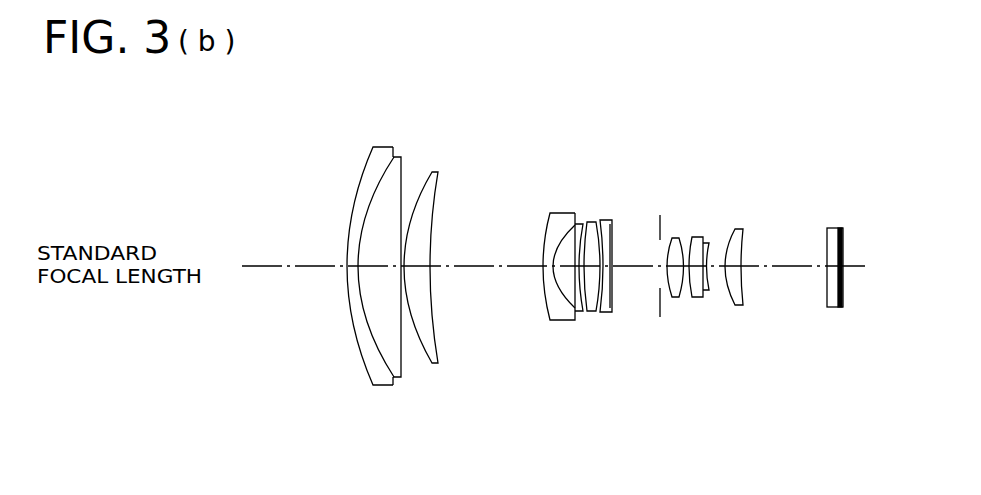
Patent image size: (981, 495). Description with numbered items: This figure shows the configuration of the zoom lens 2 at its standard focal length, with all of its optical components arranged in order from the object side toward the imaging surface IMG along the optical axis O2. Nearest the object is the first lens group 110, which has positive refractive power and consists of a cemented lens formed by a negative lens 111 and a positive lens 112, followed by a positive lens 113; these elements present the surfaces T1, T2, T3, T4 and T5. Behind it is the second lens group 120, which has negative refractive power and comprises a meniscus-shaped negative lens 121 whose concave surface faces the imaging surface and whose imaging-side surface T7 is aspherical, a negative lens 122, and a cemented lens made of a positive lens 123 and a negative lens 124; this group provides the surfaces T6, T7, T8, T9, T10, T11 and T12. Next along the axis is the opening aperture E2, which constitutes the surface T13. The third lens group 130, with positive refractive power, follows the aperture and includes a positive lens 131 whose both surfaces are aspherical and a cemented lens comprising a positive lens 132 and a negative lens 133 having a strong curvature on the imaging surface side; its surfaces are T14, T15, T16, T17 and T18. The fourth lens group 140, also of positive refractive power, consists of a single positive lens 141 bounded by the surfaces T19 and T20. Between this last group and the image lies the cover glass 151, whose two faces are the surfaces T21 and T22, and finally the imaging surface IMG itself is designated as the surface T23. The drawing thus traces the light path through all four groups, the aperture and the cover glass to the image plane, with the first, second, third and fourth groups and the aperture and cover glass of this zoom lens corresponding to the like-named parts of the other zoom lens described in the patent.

The zoom lens 2 is at (848, 143).
The optical axis O2 is at (279, 262).
The first lens group 110 is at (438, 423).
The negative lens 111 is at (386, 152).
The positive lens 112 is at (400, 157).
The positive lens 113 is at (437, 178).
The second lens group 120 is at (615, 423).
The meniscus-shaped negative lens 121 is at (560, 217).
The negative lens 122 is at (580, 227).
The positive lens 123 is at (597, 225).
The negative lens 124 is at (609, 228).
The opening aperture E2 is at (660, 215).
The third lens group 130 is at (713, 423).
The positive lens 131 is at (676, 238).
The positive lens 132 is at (697, 242).
The negative lens 133 is at (712, 243).
The fourth lens group 140 is at (745, 423).
The positive lens 141 is at (740, 236).
The cover glass 151 is at (831, 228).
The imaging surface IMG is at (846, 243).
The surface T1 is at (347, 267).
The surface T2 is at (358, 268).
The surface T3 is at (401, 268).
The surface T4 is at (404, 268).
The surface T5 is at (431, 268).
The surface T6 is at (543, 268).
The surface T7 is at (553, 268).
The surface T8 is at (582, 268).
The surface T9 is at (584, 268).
The surface T10 is at (600, 268).
The surface T11 is at (603, 268).
The surface T12 is at (612, 268).
The surface T13 is at (658, 290).
The surface T14 is at (667, 267).
The surface T15 is at (684, 268).
The surface T16 is at (689, 268).
The surface T17 is at (704, 268).
The surface T18 is at (710, 268).
The surface T19 is at (726, 268).
The surface T20 is at (743, 268).
The surface T21 is at (827, 267).
The surface T22 is at (841, 308).
The surface T23 is at (846, 297).